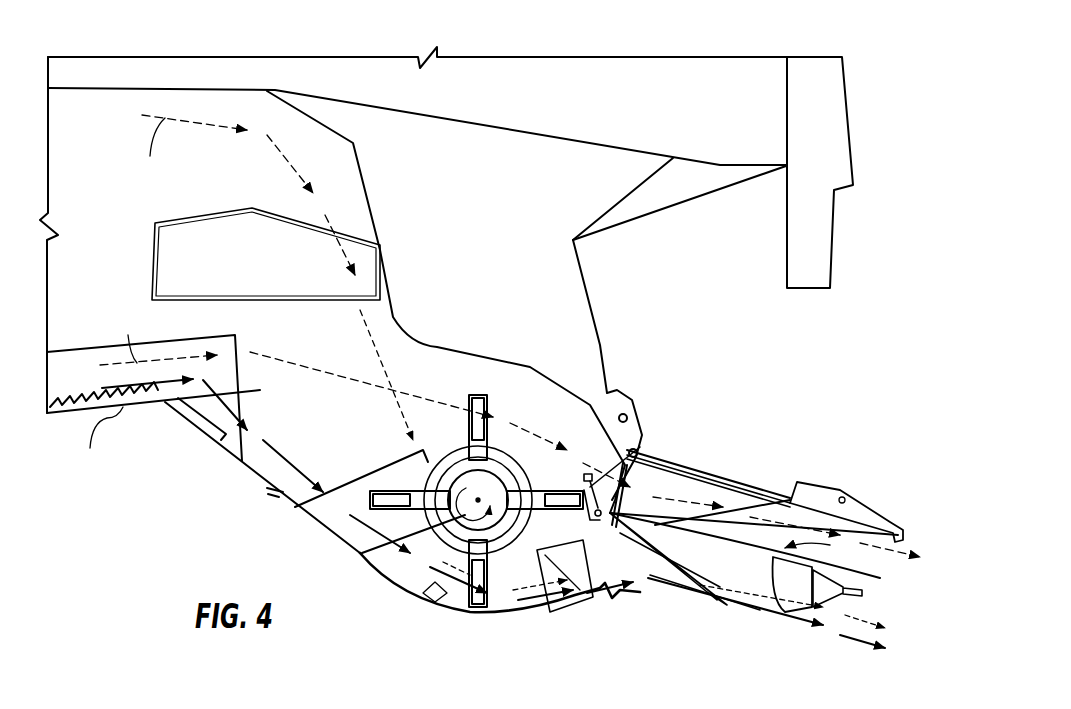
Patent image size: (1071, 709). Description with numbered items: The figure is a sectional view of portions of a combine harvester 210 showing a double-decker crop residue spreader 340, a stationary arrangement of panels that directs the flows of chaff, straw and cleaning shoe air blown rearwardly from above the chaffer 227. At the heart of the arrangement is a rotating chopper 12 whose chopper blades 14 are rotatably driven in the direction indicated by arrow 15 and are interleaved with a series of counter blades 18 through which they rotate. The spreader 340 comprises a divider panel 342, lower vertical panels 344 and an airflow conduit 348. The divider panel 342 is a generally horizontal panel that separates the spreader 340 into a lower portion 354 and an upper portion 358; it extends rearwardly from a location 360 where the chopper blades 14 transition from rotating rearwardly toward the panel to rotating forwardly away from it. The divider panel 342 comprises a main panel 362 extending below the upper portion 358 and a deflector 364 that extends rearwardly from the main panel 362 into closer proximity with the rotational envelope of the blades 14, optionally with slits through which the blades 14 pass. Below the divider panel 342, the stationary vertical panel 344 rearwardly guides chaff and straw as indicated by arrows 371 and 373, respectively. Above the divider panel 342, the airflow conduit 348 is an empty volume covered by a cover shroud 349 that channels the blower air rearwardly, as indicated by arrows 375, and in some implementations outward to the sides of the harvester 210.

The combine harvester 210 is at (218, 46).
The rotating chopper 12 is at (495, 396).
The chopper blades 14 is at (400, 500).
The arrow 15 is at (417, 570).
The counter blades 18 is at (478, 605).
The chaffer 227 is at (137, 413).
The arrow 371 is at (280, 458).
The arrow 373 is at (385, 353).
The double-decker crop residue spreader 340 is at (797, 422).
The airflow conduit 348 is at (670, 490).
The cover shroud 349 is at (717, 480).
The upper portion 358 is at (769, 495).
The arrows 375 is at (872, 543).
The divider panel 342 is at (853, 570).
The lower portion 354 is at (705, 603).
The lower vertical panels 344 is at (747, 590).
The main panel 362 is at (775, 585).
The location 360 is at (603, 530).
The deflector 364 is at (565, 547).